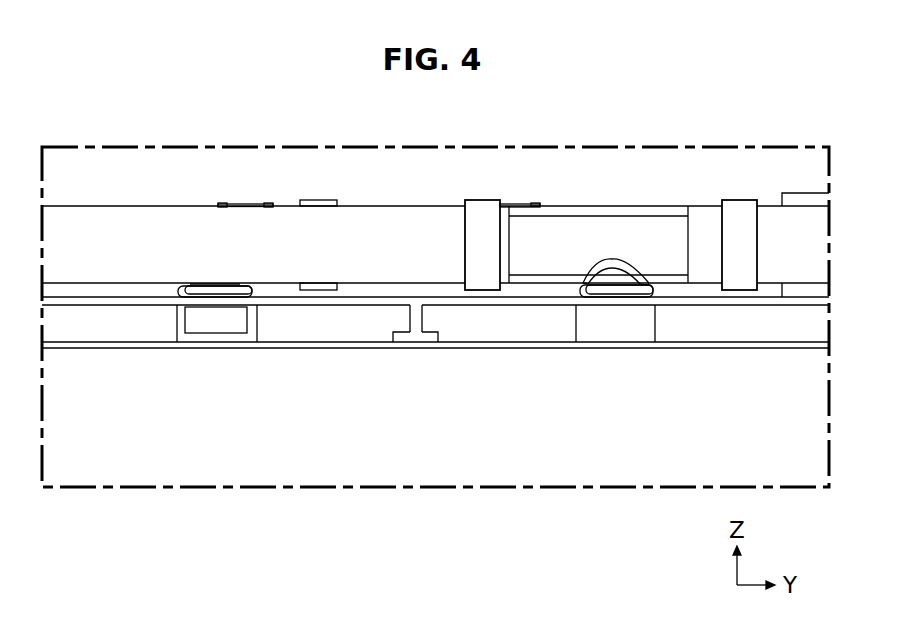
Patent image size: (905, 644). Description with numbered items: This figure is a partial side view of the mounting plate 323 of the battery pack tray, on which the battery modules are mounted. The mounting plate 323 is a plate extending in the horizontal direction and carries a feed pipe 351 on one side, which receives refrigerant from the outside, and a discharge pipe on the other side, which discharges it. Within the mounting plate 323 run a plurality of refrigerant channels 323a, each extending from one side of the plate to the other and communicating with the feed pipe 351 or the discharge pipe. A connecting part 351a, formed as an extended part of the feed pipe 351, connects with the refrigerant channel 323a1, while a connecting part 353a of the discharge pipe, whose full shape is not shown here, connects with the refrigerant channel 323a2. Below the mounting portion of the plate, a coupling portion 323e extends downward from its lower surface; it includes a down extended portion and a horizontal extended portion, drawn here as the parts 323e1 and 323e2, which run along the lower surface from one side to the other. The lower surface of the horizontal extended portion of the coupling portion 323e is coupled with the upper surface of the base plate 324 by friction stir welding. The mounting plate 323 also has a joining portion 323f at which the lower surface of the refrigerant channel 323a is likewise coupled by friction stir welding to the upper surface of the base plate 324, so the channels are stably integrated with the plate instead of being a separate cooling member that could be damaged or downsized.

The feed pipe 351 is at (640, 222).
The connecting part 351a is at (586, 283).
The connecting part 353a is at (192, 286).
The mounting plate 323 is at (435, 367).
The refrigerant channel 323a is at (465, 371).
The refrigerant channel 323a1 is at (574, 323).
The refrigerant channel 323a2 is at (257, 322).
The coupling portion 323e is at (442, 371).
The upper narrow portion of channel 323e1 is at (423, 313).
The lower wide portion of channel 323e2 is at (401, 362).
The joining portion 323f is at (212, 342).
The base plate 324 is at (752, 349).